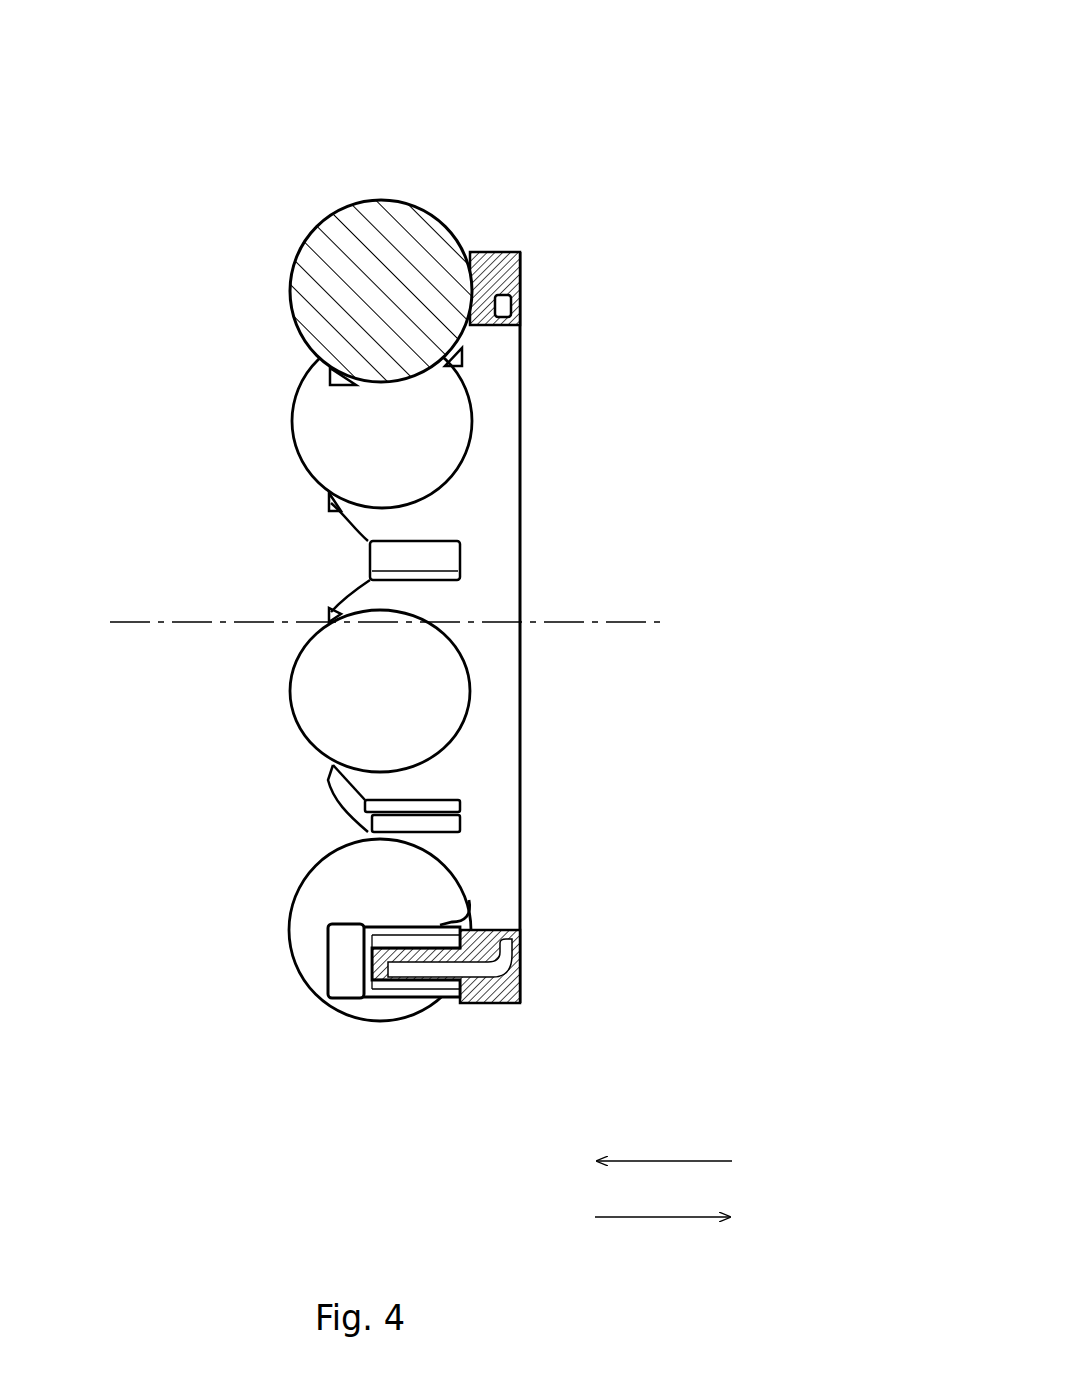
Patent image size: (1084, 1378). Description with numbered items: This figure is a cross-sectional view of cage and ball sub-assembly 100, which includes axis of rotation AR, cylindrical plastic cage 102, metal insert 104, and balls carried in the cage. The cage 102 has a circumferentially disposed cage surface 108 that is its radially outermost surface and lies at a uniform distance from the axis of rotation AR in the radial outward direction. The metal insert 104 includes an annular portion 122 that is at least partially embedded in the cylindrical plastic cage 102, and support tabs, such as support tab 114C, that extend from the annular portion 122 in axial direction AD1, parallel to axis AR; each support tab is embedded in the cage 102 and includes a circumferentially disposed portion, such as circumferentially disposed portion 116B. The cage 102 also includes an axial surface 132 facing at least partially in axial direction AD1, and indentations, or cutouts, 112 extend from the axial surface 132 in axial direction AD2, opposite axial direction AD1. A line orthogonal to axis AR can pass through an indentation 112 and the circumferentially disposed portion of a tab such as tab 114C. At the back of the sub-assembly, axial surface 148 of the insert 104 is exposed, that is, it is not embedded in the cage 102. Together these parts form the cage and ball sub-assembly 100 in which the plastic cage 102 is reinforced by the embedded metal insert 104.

The cage and ball sub-assembly 100 is at (616, 72).
The cylindrical plastic cage 102 is at (481, 248).
The metal insert 104 is at (524, 290).
The circumferentially disposed cage surface 108 is at (485, 794).
The indentations 112 is at (445, 996).
The support tab 114C is at (428, 940).
The circumferentially disposed portion 116B is at (410, 972).
The annular portion 122 is at (500, 294).
The axial surface 132 is at (347, 530).
The axial surface 148 is at (522, 313).
The axis of rotation AR is at (627, 624).
The axial direction AD1 is at (637, 1160).
The axial direction AD2 is at (660, 1217).